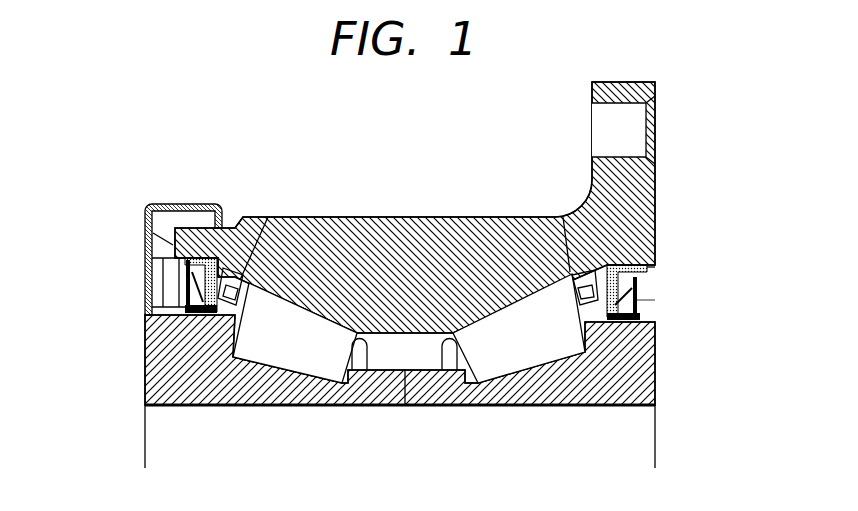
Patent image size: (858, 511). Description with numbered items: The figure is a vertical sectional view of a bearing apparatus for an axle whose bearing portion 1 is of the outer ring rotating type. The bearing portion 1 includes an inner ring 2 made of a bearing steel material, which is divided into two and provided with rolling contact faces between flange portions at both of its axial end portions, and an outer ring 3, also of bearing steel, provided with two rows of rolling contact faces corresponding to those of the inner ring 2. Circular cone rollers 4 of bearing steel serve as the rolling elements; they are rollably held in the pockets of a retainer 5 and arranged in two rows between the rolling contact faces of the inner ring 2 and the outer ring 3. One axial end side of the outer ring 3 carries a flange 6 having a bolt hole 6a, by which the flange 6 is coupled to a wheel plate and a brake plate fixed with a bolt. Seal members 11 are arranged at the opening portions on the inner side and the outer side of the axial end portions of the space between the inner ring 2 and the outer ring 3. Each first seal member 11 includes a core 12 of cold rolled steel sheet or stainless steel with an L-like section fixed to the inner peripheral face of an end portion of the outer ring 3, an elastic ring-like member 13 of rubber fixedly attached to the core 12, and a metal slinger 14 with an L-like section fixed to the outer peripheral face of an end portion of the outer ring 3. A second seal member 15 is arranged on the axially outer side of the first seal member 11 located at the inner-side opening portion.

The bearing portion 1 is at (358, 130).
The inner ring 2 is at (247, 395).
The outer ring 3 is at (428, 217).
The circular cone rollers 4 is at (353, 387).
The retainer 5 is at (268, 217).
The flange 6 is at (633, 82).
The bolt hole 6a is at (632, 133).
The seal member 11 is at (394, 244).
The core 12 is at (180, 253).
The elastic ring-like member 13 is at (187, 273).
The slinger 14 is at (187, 297).
The second seal member 15 is at (142, 210).